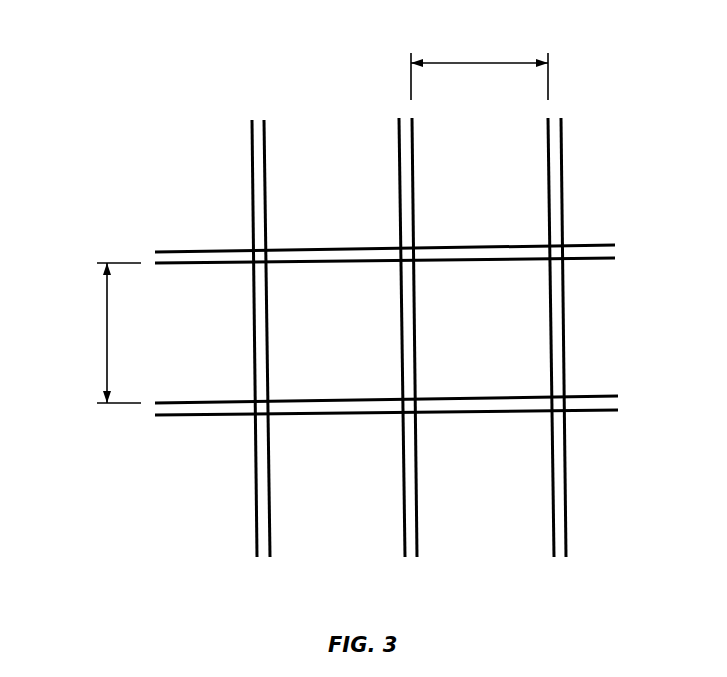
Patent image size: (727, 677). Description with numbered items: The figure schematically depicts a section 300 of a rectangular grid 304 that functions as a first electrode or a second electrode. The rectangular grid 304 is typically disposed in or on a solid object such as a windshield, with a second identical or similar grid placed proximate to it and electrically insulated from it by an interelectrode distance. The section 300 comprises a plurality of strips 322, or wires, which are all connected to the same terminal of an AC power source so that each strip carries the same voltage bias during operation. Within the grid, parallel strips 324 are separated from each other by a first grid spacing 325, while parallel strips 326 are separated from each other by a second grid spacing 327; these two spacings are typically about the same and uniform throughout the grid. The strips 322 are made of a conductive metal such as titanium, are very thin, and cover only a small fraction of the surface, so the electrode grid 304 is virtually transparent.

The section 300 is at (151, 72).
The rectangular grid 304 is at (158, 534).
The strips 322 is at (192, 258).
The parallel strips 324 is at (408, 170).
The first grid spacing 325 is at (538, 63).
The parallel strips 326 is at (596, 250).
The second grid spacing 327 is at (105, 308).